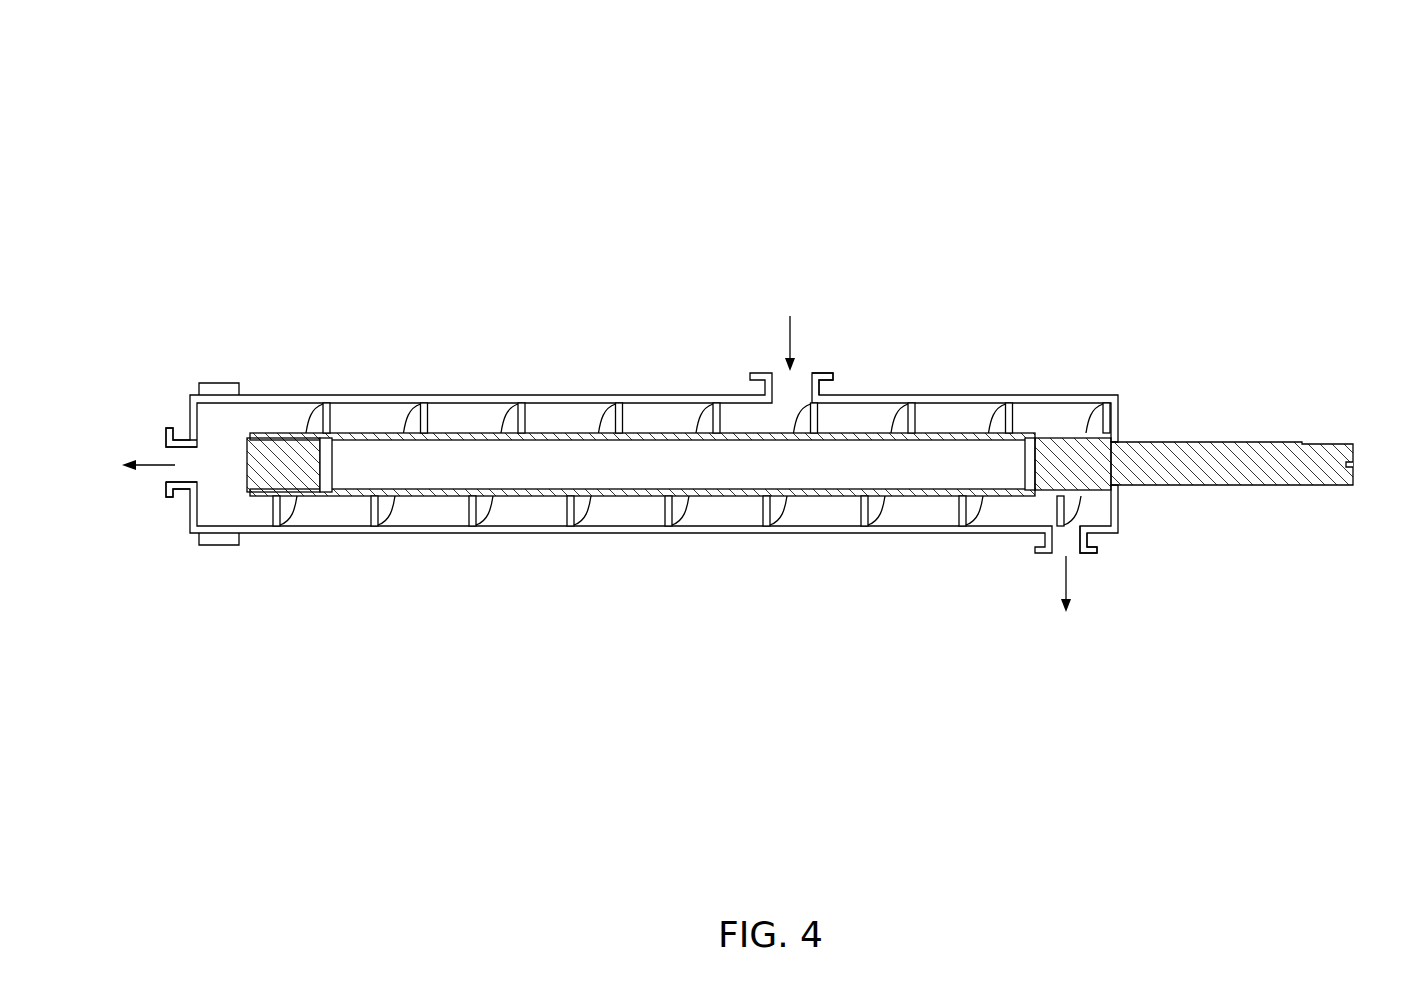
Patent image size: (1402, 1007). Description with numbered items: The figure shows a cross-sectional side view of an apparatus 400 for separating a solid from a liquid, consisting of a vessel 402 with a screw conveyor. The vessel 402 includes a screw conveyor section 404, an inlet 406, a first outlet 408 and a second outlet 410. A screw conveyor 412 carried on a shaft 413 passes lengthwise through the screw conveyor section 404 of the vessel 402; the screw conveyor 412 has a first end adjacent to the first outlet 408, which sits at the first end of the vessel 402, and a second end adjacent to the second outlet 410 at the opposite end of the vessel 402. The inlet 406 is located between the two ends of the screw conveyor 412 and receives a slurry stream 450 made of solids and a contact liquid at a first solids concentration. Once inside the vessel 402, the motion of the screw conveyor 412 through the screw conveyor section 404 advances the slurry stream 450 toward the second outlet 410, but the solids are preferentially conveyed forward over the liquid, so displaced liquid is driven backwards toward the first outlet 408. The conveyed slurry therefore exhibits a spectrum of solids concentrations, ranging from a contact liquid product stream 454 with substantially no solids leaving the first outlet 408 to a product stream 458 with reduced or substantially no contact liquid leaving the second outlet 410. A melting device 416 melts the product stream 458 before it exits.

The extruder assembly 400 is at (232, 78).
The vessel 402 is at (248, 394).
The screw conveyor section 404 is at (575, 394).
The inlet 406 is at (831, 378).
The first outlet 408 is at (1097, 553).
The second outlet 410 is at (162, 499).
The screw conveyor 412 is at (762, 528).
The shaft 413 is at (1290, 442).
The melting device 416 is at (218, 546).
The slurry stream 450 is at (793, 330).
The contact liquid product stream 454 is at (1066, 601).
The product stream 458 is at (142, 460).